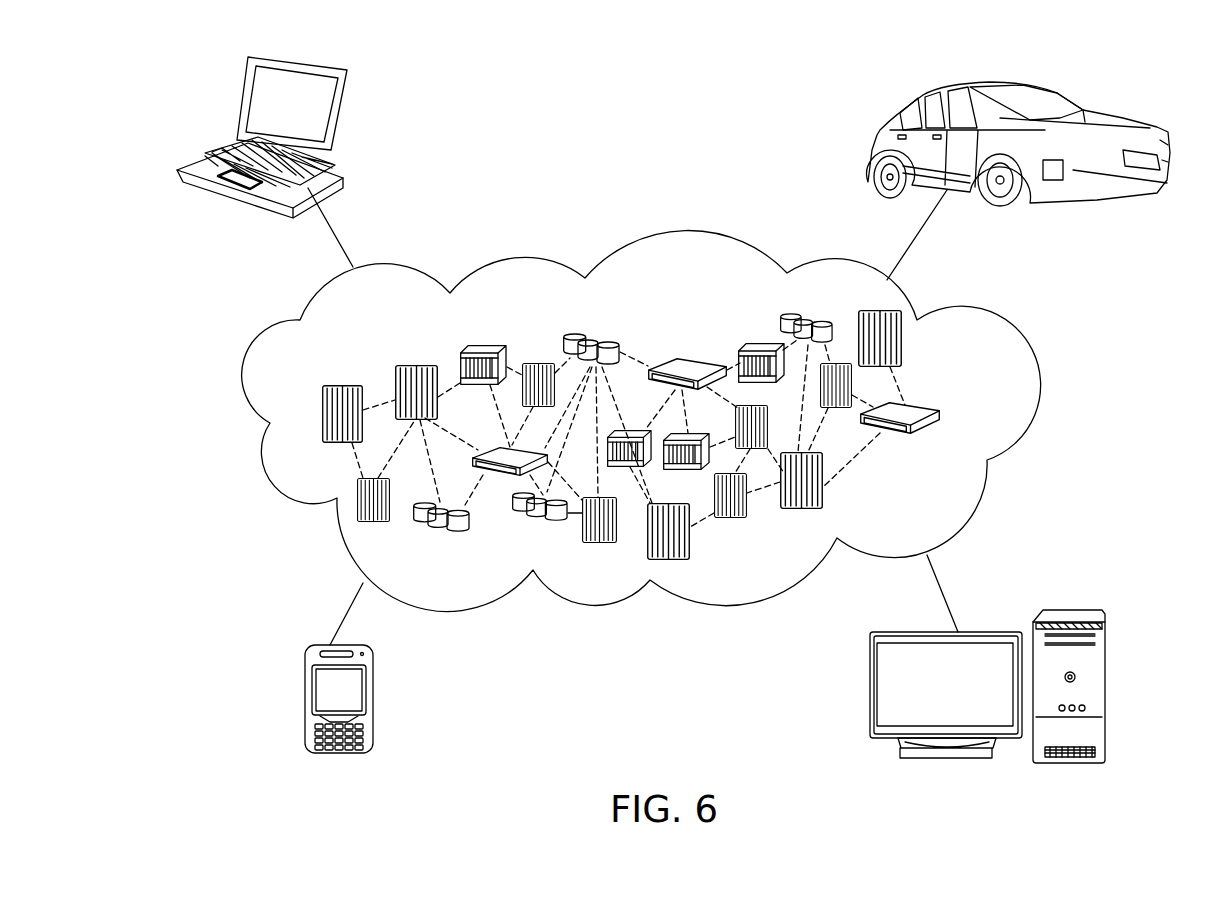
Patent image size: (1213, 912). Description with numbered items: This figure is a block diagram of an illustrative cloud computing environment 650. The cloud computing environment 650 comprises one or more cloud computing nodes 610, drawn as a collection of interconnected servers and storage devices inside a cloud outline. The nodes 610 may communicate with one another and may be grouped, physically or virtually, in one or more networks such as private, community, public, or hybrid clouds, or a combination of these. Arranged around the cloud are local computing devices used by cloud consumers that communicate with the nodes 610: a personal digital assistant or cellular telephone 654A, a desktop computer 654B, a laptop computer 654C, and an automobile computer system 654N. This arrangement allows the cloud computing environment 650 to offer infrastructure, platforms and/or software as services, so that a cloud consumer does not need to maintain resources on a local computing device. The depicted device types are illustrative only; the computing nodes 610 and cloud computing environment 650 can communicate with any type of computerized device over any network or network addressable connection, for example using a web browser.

The cloud computing nodes 610 is at (268, 357).
The cloud computing environment 650 is at (268, 457).
The personal digital assistant (PDA) or cellular telephone 654A is at (306, 678).
The desktop computer 654B is at (870, 678).
The laptop computer 654C is at (240, 132).
The automobile computer system 654N is at (886, 132).